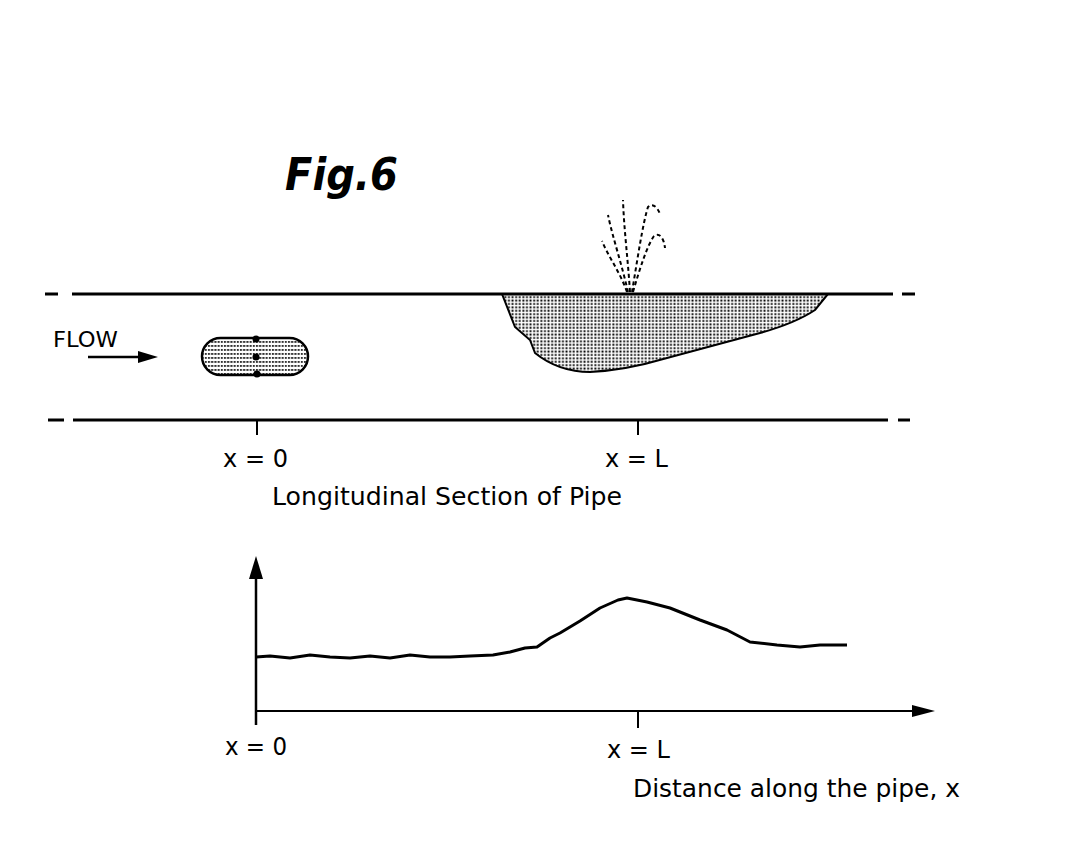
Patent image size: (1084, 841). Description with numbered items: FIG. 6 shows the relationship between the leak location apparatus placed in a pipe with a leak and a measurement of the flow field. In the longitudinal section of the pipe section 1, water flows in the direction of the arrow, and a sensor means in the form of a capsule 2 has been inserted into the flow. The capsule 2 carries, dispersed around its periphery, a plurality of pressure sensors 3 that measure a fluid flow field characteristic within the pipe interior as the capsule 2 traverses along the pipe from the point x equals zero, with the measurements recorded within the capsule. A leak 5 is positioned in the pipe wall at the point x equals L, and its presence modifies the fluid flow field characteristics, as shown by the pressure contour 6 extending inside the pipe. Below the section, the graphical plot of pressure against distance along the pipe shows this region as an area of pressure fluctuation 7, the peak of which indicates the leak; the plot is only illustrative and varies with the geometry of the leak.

The pipe section 1 is at (818, 420).
The capsule 2 is at (206, 346).
The sensors 3 is at (258, 336).
The leak 5 is at (633, 293).
The pressure contour 6 is at (672, 333).
The signal peak 7 is at (633, 608).